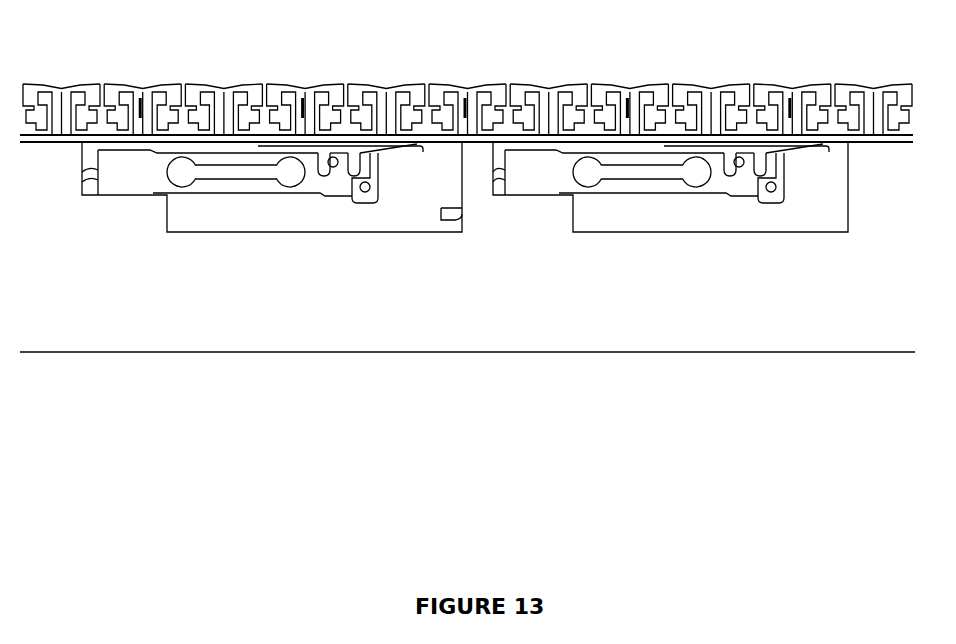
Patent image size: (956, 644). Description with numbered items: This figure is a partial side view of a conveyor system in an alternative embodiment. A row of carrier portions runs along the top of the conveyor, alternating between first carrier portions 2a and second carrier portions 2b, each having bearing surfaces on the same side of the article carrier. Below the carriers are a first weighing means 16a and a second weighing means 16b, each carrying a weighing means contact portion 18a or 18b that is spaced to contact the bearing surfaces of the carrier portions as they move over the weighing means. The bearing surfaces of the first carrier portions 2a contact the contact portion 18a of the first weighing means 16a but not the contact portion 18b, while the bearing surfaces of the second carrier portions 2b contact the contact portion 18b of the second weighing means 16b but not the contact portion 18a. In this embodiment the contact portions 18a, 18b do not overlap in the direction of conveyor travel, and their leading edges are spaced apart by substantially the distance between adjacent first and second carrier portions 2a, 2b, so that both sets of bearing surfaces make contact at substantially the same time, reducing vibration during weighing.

The first carrier portion 2a is at (114, 84).
The second carrier portion 2b is at (205, 85).
The first weighing means 16a is at (533, 180).
The second weighing means 16b is at (135, 182).
The weighing means contact portion 18a is at (752, 136).
The weighing means contact portion 18b is at (345, 135).